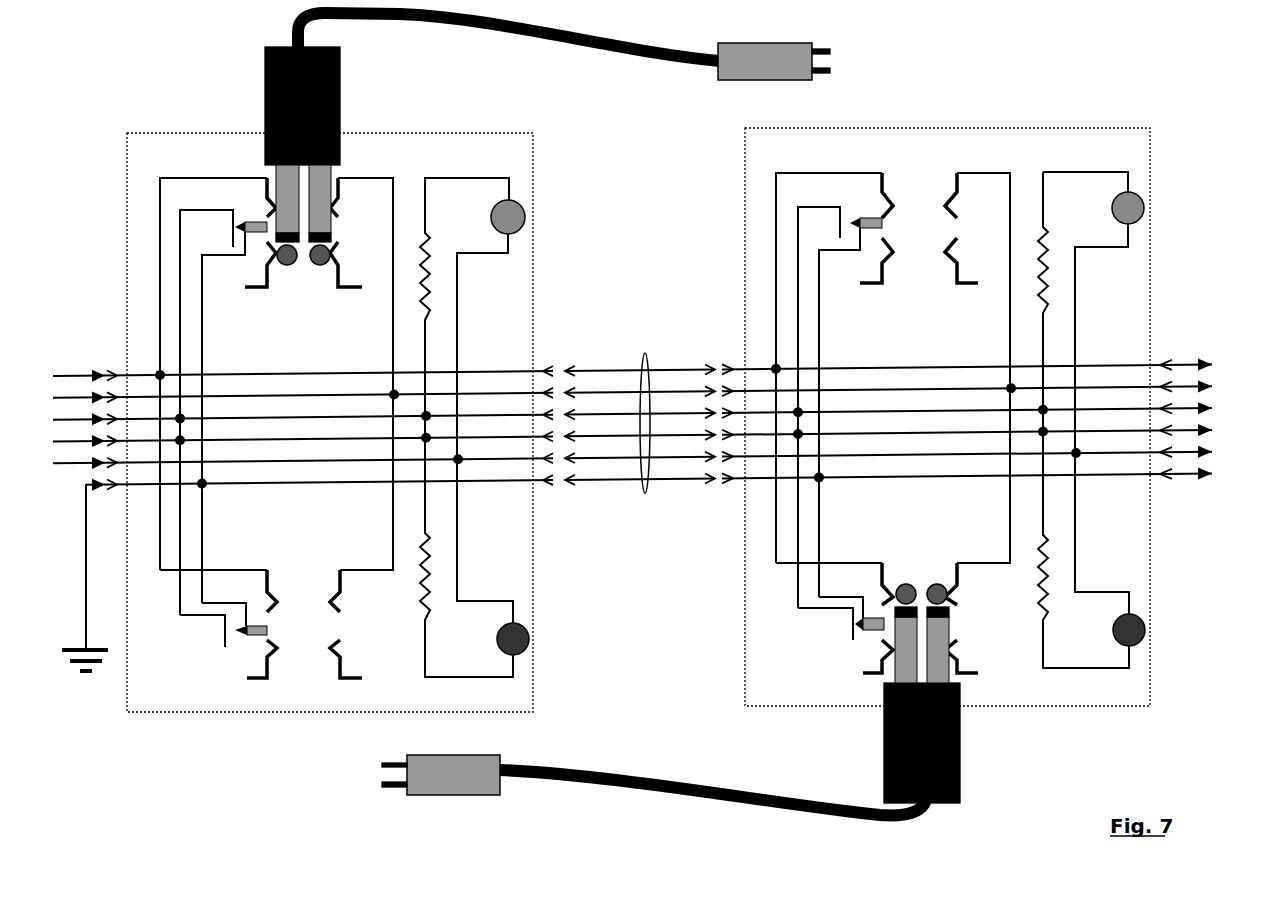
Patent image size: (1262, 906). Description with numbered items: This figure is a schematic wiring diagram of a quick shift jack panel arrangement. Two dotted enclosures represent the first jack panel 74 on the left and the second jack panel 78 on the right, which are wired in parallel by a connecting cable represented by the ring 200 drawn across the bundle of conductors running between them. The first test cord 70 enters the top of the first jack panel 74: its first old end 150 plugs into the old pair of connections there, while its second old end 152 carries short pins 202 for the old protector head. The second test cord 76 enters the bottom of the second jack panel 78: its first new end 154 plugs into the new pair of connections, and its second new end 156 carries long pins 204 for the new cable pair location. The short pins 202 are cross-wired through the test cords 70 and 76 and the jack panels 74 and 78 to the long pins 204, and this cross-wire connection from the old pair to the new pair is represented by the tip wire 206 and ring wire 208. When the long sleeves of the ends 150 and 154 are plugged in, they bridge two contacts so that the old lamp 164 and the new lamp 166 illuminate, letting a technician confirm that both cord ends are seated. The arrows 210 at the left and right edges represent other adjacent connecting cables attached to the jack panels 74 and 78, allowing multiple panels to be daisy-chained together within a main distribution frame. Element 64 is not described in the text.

The indicator LED 64 is at (525, 214).
The first test cord 70 is at (562, 38).
The first jack panel 74 is at (537, 672).
The second test cord 76 is at (712, 798).
The second jack panel 78 is at (747, 663).
The first old end 150 is at (340, 85).
The second old end 152 is at (758, 43).
The first new end 154 is at (962, 753).
The second new end 156 is at (483, 795).
The old lamp 164 is at (1145, 208).
The new lamp 166 is at (525, 625).
The ring 200 is at (651, 363).
The short pins 202 is at (830, 50).
The long pins 204 is at (392, 788).
The tip wire 206 is at (265, 374).
The ring wire 208 is at (345, 397).
The arrows 210 is at (77, 362).